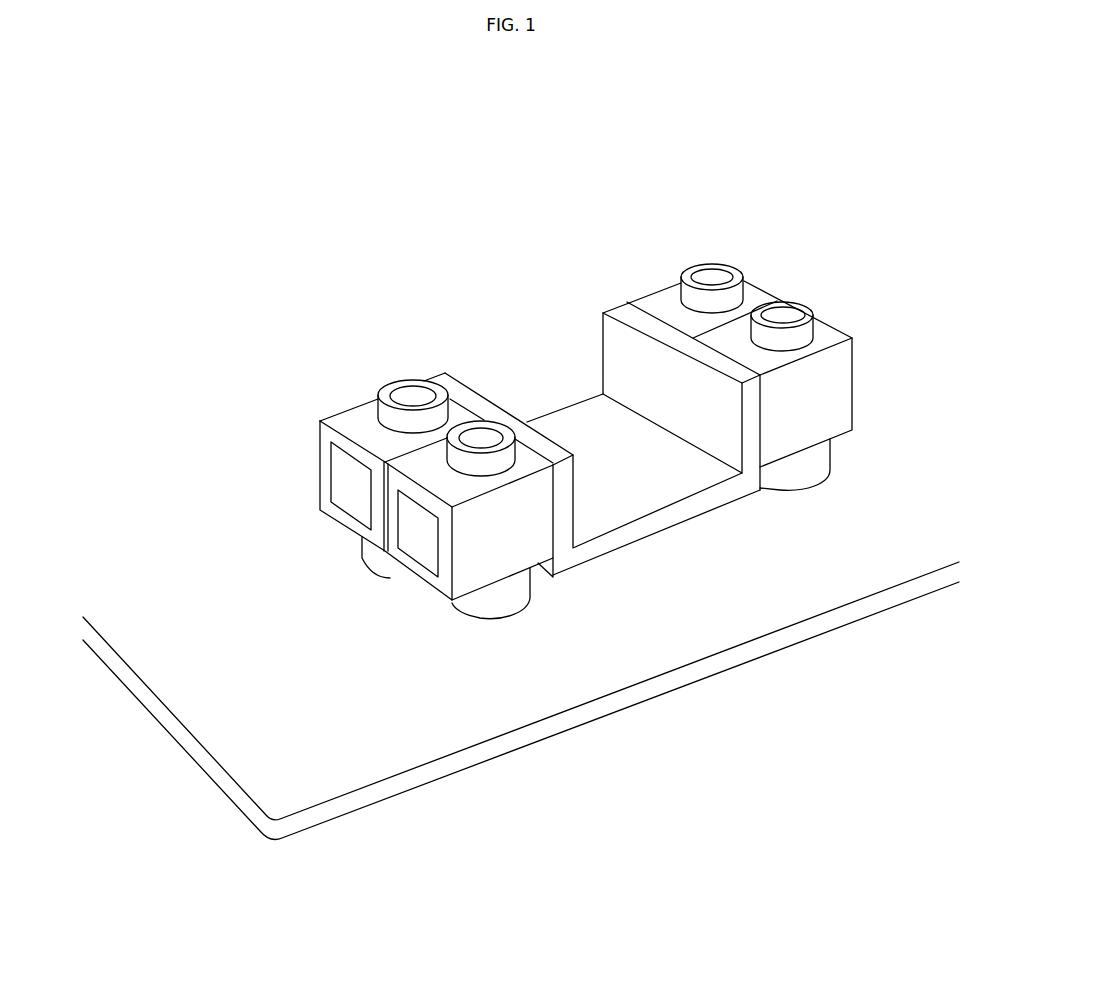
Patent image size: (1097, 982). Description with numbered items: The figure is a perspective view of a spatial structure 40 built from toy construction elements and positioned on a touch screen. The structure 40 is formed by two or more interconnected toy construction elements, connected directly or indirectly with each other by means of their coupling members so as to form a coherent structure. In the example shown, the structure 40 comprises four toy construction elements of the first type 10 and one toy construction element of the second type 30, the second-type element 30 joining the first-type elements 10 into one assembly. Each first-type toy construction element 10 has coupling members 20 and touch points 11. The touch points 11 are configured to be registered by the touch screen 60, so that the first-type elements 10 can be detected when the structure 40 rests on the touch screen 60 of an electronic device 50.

The toy construction element of the first type 10 is at (357, 432).
The touch point 11 is at (378, 562).
The coupling member 20 is at (405, 395).
The toy construction element of the second type 30 is at (680, 490).
The spatial structure 40 is at (322, 246).
The electronic device 50 is at (153, 707).
The touch screen 60 is at (150, 632).